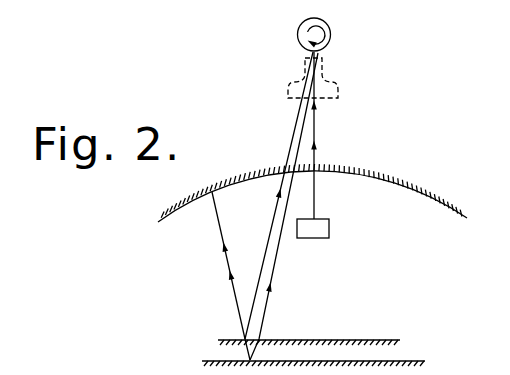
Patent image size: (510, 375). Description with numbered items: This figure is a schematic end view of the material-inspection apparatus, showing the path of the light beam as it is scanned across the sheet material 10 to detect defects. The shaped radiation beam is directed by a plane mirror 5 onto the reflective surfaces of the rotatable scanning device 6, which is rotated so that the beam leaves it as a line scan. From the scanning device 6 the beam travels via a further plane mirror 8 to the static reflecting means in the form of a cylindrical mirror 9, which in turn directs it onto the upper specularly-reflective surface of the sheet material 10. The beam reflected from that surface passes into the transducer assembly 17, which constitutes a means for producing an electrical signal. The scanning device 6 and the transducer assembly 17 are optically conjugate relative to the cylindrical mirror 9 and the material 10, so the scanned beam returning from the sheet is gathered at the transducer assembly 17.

The plane mirror 5 is at (322, 232).
The rotatable scanning device 6 is at (331, 38).
The further plane mirror 8 is at (290, 340).
The cylindrical mirror 9 is at (387, 180).
The sheet material 10 is at (400, 362).
The transducer assembly 17 is at (290, 84).